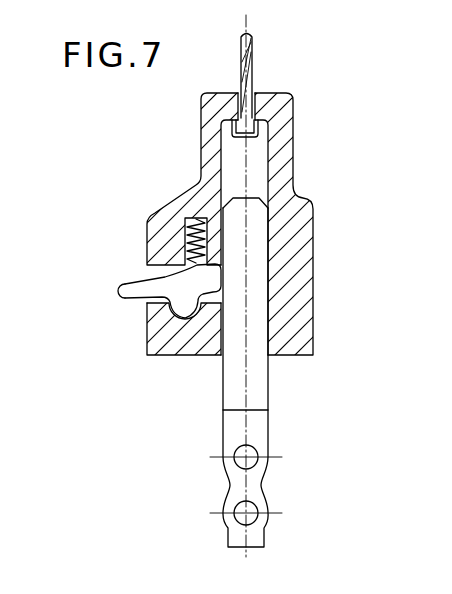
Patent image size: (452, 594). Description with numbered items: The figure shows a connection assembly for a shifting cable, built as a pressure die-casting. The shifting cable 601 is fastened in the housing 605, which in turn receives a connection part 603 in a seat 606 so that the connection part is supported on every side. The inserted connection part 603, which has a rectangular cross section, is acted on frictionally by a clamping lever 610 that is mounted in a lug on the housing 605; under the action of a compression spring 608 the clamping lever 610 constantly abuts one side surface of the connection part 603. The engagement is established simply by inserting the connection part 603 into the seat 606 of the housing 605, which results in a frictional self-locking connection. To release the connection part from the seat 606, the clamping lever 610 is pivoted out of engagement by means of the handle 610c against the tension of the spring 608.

The shifting cable 601 is at (250, 57).
The connection part 603 is at (253, 379).
The housing 605 is at (279, 121).
The seat 606 is at (258, 173).
The compression spring 608 is at (203, 262).
The clamping lever 610 is at (183, 306).
The handle 610c is at (117, 292).